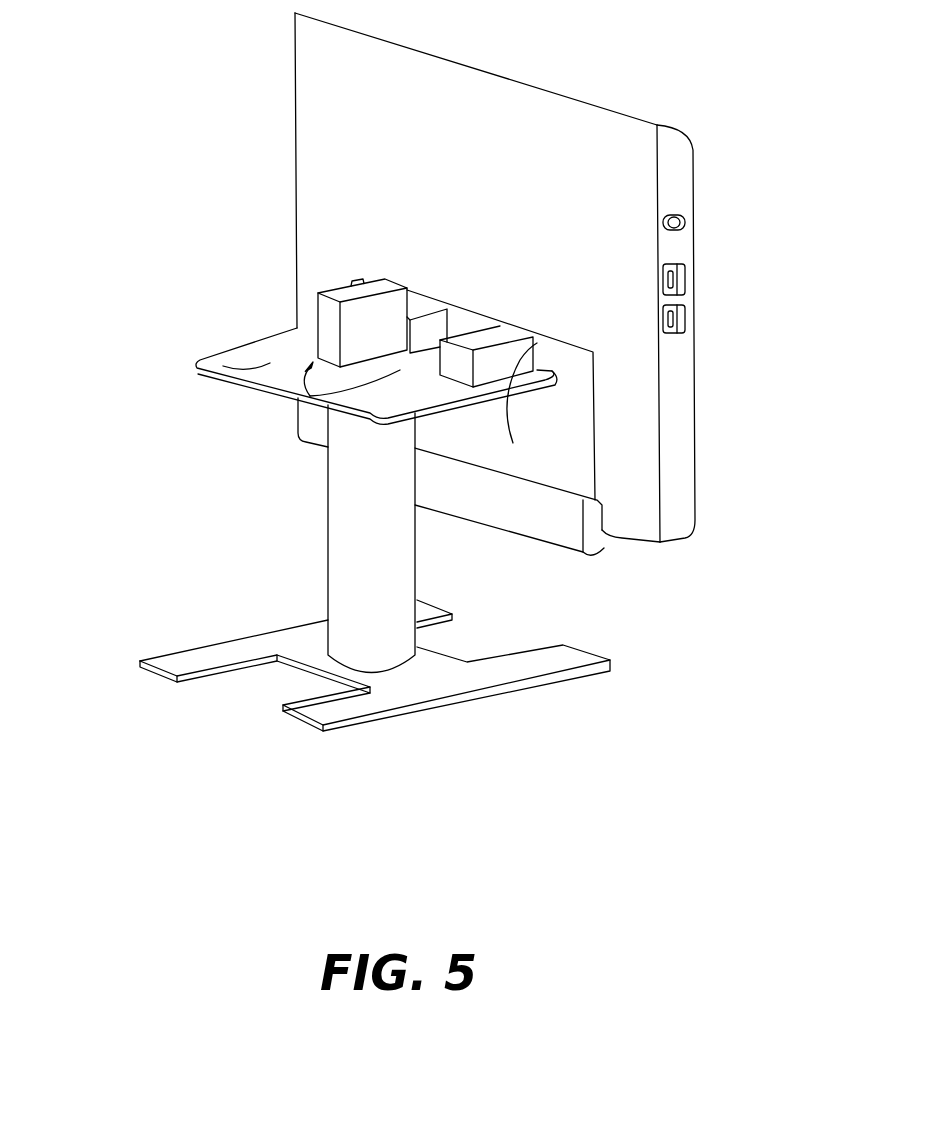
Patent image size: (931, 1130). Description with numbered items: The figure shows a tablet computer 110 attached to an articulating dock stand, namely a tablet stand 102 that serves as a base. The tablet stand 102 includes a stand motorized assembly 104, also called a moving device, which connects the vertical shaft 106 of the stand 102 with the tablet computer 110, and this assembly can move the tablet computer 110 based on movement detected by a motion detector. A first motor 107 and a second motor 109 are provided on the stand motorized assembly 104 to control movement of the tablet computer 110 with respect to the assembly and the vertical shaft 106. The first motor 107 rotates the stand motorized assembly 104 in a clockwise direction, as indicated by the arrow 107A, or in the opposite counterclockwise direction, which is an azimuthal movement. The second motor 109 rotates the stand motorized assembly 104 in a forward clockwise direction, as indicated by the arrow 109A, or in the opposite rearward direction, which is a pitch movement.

The tablet stand 102 is at (253, 477).
The stand motorized assembly 104 is at (253, 343).
The vertical shaft 106 is at (368, 527).
The first motor 107 is at (215, 355).
The arrow 107A is at (297, 397).
The second motor 109 is at (533, 380).
The arrow 109A is at (563, 362).
The tablet computer 110 is at (633, 128).